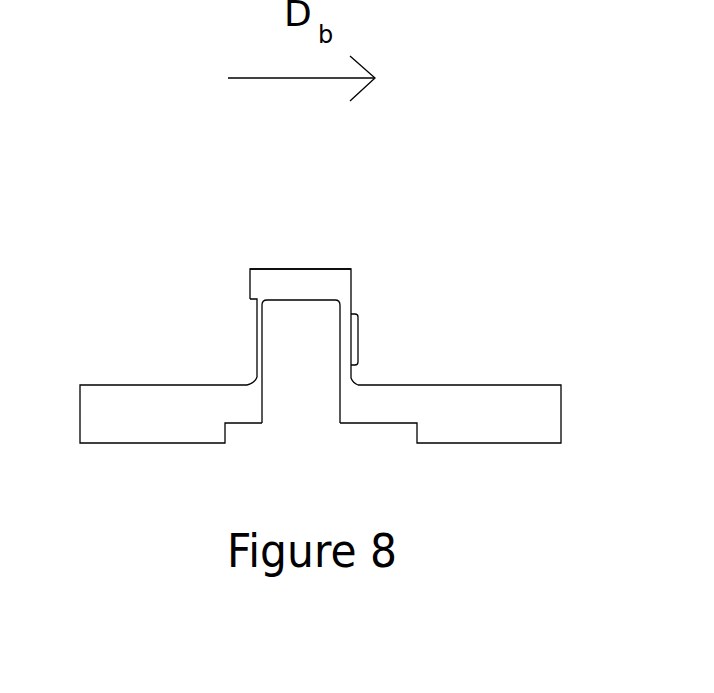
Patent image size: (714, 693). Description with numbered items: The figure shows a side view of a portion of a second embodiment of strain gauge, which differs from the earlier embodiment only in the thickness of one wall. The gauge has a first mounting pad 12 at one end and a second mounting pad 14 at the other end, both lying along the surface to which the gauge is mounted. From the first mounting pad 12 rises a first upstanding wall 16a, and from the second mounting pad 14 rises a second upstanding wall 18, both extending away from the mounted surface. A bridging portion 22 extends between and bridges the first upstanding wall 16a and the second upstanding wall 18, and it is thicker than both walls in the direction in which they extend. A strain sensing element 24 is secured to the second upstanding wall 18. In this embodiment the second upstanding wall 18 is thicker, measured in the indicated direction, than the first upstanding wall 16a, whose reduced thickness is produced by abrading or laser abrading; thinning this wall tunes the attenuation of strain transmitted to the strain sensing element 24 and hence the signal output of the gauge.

The first mounting pad 12 is at (155, 413).
The second mounting pad 14 is at (502, 417).
The first upstanding wall 16a is at (251, 338).
The second upstanding wall 18 is at (352, 292).
The bridging portion 22 is at (302, 287).
The strain sensing element 24 is at (357, 340).